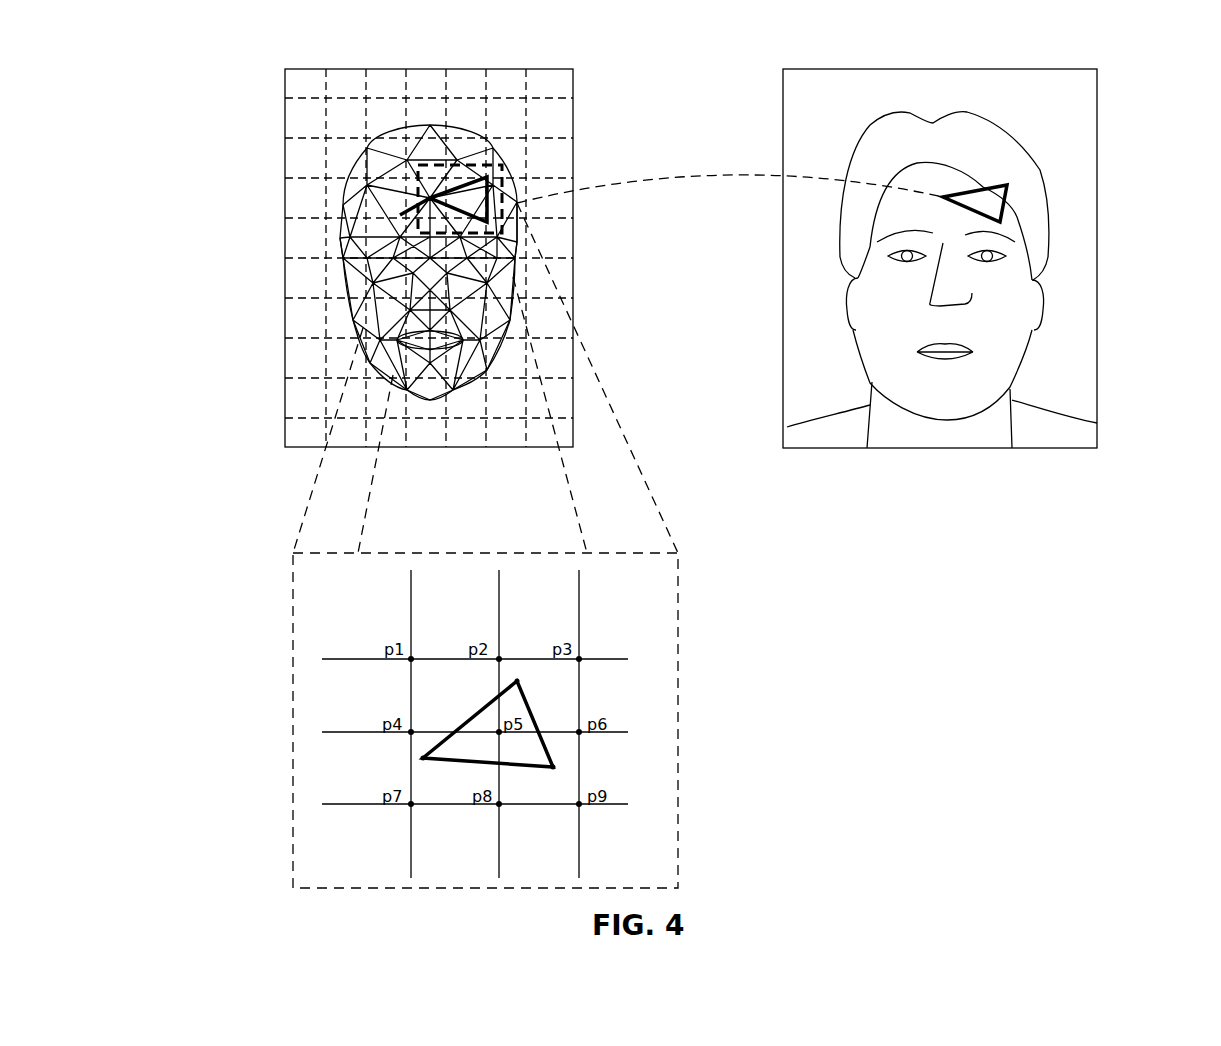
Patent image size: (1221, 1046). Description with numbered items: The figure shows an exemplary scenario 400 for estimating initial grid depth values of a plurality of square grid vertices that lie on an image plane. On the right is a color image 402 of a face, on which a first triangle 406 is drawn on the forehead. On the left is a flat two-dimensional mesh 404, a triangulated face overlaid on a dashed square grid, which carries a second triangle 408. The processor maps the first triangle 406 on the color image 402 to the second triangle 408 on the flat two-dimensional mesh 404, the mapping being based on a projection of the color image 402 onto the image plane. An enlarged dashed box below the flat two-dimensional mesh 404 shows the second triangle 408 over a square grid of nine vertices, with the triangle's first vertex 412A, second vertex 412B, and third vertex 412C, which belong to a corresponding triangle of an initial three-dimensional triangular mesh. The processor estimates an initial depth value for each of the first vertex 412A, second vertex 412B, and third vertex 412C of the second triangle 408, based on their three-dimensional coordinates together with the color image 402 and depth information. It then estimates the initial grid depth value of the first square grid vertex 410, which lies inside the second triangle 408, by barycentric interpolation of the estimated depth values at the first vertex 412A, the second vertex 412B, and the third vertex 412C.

The exemplary scenario 400 is at (1123, 107).
The color image 402 is at (917, 309).
The flat 2D mesh 404 is at (285, 382).
The first triangle 406 is at (968, 204).
The second triangle 408 is at (430, 198).
The first square grid vertex 410 is at (498, 732).
The first vertex 412A is at (517, 677).
The second vertex 412B is at (423, 758).
The third vertex 412C is at (553, 767).